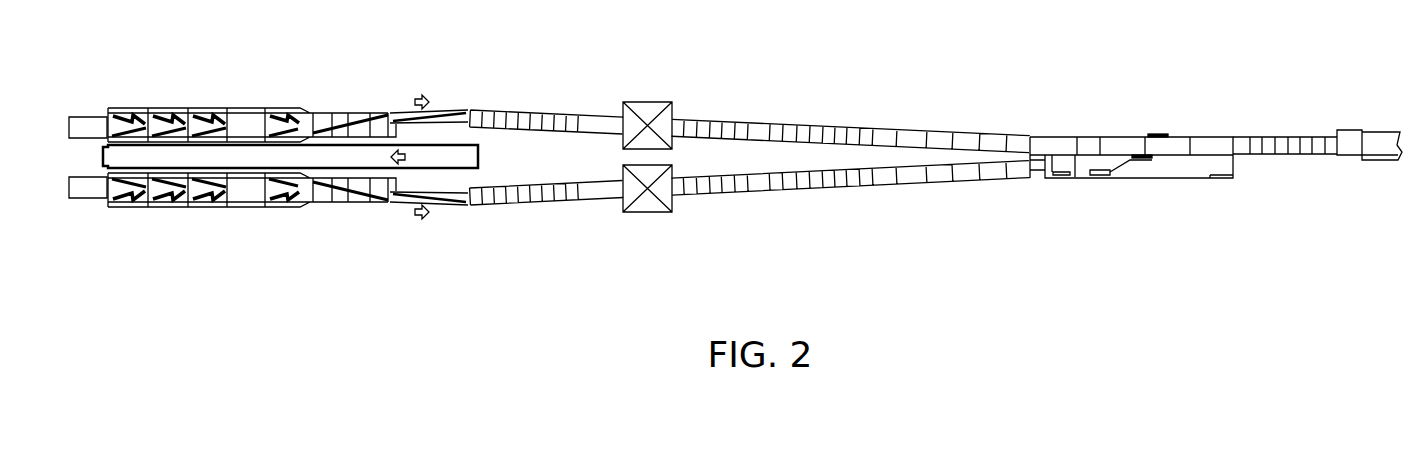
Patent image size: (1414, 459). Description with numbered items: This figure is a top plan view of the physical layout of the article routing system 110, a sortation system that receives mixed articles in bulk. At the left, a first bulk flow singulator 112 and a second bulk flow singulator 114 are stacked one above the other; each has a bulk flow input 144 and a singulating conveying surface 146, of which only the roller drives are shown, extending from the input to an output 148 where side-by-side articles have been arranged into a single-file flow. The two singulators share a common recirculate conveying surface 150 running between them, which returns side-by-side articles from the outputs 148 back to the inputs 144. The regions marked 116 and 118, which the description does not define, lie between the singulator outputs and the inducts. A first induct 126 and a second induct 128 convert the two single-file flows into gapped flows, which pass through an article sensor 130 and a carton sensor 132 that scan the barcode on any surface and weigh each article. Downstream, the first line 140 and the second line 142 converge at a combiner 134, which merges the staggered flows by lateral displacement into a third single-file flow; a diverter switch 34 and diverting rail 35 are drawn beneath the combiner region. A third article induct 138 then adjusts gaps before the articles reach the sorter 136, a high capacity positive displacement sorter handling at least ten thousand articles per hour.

The article routing system 110 is at (745, 31).
The first bulk flow singulator 112 is at (219, 103).
The second bulk flow singulator 114 is at (218, 214).
The first drive assembly 116 is at (477, 90).
The second drive assembly 118 is at (477, 250).
The first induct 126 is at (537, 112).
The second induct 128 is at (534, 198).
The article sensor 130 is at (660, 103).
The carton sensor 132 is at (663, 213).
The combiner 134 is at (1113, 138).
The sorter 136 is at (1387, 137).
The third article induct 138 is at (1297, 140).
The first line 140 is at (848, 130).
The second line 142 is at (847, 185).
The bulk flow input 144 is at (92, 118).
The singulating conveying surface 146 is at (206, 158).
The output 148 is at (460, 111).
The recirculate conveying surface 150 is at (480, 155).
The diverter switch 34 is at (1100, 177).
The diverting rail 35 is at (1125, 165).